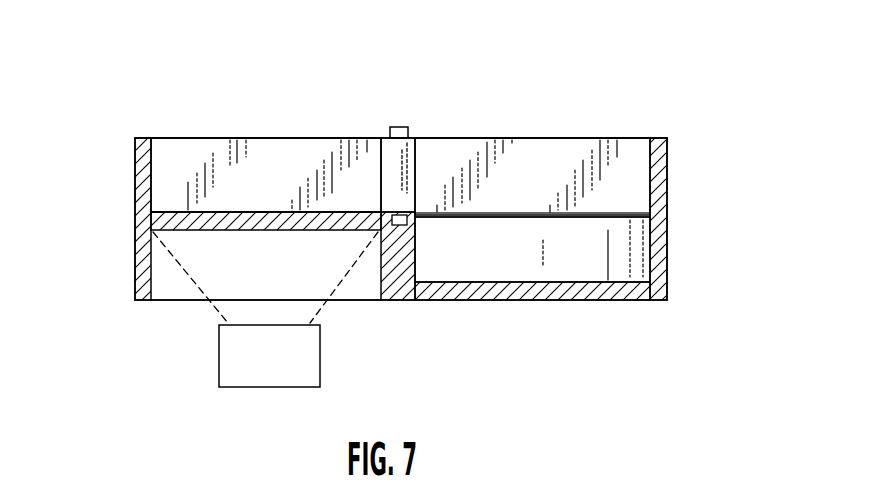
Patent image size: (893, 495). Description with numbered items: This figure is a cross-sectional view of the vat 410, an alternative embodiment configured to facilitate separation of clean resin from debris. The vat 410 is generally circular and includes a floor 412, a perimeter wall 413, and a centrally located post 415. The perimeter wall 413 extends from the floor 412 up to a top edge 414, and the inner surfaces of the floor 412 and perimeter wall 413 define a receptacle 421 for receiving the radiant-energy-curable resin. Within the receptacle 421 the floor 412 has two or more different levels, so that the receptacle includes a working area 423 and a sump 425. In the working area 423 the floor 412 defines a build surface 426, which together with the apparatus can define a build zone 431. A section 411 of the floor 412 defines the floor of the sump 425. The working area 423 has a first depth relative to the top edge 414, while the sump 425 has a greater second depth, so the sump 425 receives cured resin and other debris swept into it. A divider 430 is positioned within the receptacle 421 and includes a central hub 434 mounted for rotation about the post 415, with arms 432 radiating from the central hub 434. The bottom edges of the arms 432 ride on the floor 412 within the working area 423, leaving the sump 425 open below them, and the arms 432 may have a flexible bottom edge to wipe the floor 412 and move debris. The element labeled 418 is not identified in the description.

The vat 410 is at (548, 82).
The section of the floor 411 is at (517, 295).
The floor 412 is at (187, 220).
The perimeter wall 413 is at (140, 202).
The top edge 414 is at (137, 138).
The post 415 is at (400, 127).
The sensor 418 is at (288, 371).
The receptacle 421 is at (622, 147).
The working area 423 is at (174, 202).
The sump 425 is at (613, 272).
The build surface 426 is at (220, 212).
The divider 430 is at (461, 130).
The build zone 431 is at (303, 148).
The arms 432 is at (285, 188).
The central hub 434 is at (380, 166).